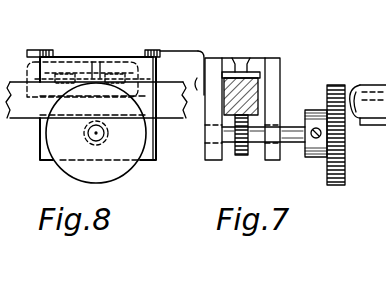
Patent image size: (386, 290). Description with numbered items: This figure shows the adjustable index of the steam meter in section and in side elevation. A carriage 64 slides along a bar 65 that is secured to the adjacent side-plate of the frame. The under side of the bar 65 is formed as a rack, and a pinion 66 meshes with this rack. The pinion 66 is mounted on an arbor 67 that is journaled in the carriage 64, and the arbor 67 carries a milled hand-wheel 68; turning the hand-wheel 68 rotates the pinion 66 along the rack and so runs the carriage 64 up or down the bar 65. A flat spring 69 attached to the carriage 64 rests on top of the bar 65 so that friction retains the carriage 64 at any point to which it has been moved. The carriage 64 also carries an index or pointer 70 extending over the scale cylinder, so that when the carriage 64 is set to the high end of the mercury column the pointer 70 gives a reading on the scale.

In FIG. 7, the carriage 64 is at (272, 75).
In FIG. 8, the carriage 64 is at (157, 158).
In FIG. 7, the bar 65 is at (255, 100).
In FIG. 8, the bar 65 is at (165, 108).
In FIG. 7, the pinion 66 is at (243, 160).
In FIG. 7, the arbor 67 is at (226, 160).
In FIG. 7, the milled hand-wheel 68 is at (345, 160).
In FIG. 8, the milled hand-wheel 68 is at (120, 170).
In FIG. 7, the flat spring 69 is at (250, 70).
In FIG. 8, the flat spring 69 is at (48, 80).
In FIG. 8, the index or pointer 70 is at (40, 50).